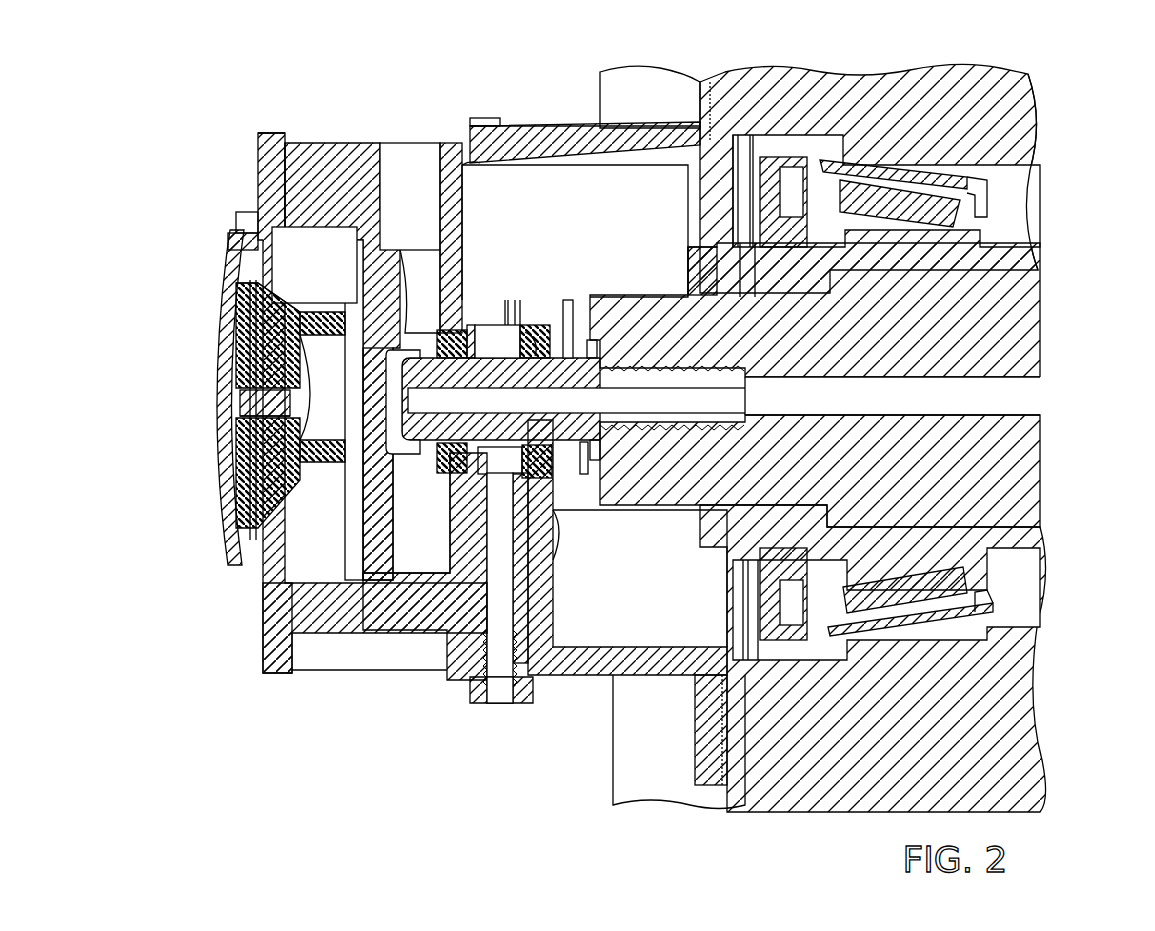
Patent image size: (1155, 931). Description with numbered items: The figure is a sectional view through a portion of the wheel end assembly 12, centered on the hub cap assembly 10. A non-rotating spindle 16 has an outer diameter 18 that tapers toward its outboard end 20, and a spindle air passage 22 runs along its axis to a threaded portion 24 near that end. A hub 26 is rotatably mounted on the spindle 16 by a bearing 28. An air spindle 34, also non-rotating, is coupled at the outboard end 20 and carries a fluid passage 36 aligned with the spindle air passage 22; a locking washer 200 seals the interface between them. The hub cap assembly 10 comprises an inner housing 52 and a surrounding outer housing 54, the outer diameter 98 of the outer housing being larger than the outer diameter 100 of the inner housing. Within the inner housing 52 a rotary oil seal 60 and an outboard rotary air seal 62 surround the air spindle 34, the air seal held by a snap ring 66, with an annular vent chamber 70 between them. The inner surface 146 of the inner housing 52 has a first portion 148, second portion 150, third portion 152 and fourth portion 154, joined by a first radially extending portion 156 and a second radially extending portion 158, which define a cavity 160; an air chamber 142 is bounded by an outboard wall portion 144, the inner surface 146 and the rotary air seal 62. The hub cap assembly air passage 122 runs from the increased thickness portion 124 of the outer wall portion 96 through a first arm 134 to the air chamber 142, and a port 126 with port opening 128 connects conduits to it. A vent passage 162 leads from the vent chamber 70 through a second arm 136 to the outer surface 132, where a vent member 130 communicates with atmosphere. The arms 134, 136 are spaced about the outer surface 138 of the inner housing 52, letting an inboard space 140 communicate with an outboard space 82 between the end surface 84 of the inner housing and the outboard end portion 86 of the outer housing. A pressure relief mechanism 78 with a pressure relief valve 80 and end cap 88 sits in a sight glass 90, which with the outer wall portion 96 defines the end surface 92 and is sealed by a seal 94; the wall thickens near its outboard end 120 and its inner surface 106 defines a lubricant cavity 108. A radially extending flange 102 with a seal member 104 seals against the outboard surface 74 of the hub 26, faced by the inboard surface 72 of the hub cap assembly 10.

The hub cap assembly 10 is at (700, 728).
The wheel end assembly 12 is at (172, 92).
The spindle 16 is at (1030, 490).
The outer diameter 18 is at (1036, 268).
The outboard end 20 is at (598, 335).
The spindle air passage 22 is at (1008, 396).
The threaded portion 24 is at (742, 300).
The hub 26 is at (826, 82).
The bearing 28 is at (885, 602).
The air spindle 34 is at (584, 476).
The fluid passage 36 is at (700, 297).
The inner housing 52 is at (405, 502).
The outer housing 54 is at (484, 120).
The rotary oil seal 60 is at (538, 323).
The rotary air seal 62 is at (413, 482).
The snap ring 66 is at (471, 325).
The vent chamber 70 is at (508, 471).
The inboard surface 72 is at (735, 128).
The outboard surface 74 is at (752, 128).
The pressure relief mechanism 78 is at (223, 432).
The pressure relief valve 80 is at (245, 500).
The space 82 is at (357, 455).
The end surface 84 is at (353, 432).
The outboard end portion 86 is at (290, 284).
The end cap 88 is at (250, 462).
The sight glass 90 is at (280, 572).
The end surface 92 is at (246, 235).
The seal 94 is at (300, 205).
The outer wall portion 96 is at (272, 133).
The outer diameter 98 is at (553, 125).
The outer diameter 100 is at (517, 298).
The radially extending flange 102 is at (700, 105).
The seal member 104 is at (770, 90).
The inner surface 106 is at (552, 690).
The cavity 108 is at (667, 615).
The outboard end 120 is at (258, 152).
The air passage 122 is at (232, 268).
The increased thickness portion 124 is at (332, 190).
The port 126 is at (450, 180).
The port opening 128 is at (397, 150).
The vent member 130 is at (498, 706).
The outer surface 132 is at (508, 122).
The first arm 134 is at (470, 172).
The second arm 136 is at (553, 592).
The outer surface 138 is at (495, 322).
The inboard space 140 is at (588, 197).
The air chamber 142 is at (238, 388).
The outboard wall portion 144 is at (238, 412).
The inner surface 146 is at (455, 522).
The first portion 148 is at (445, 475).
The second portion 150 is at (240, 346).
The third portion 152 is at (558, 548).
The fourth portion 154 is at (568, 345).
The first radially extending portion 156 is at (240, 322).
The second radially extending portion 158 is at (518, 386).
The cavity 160 is at (506, 298).
The vent passage 162 is at (476, 704).
The locking washer 200 is at (595, 462).